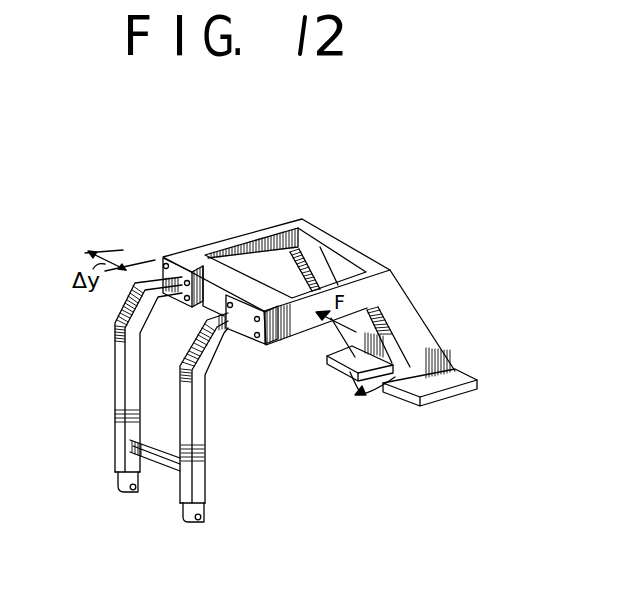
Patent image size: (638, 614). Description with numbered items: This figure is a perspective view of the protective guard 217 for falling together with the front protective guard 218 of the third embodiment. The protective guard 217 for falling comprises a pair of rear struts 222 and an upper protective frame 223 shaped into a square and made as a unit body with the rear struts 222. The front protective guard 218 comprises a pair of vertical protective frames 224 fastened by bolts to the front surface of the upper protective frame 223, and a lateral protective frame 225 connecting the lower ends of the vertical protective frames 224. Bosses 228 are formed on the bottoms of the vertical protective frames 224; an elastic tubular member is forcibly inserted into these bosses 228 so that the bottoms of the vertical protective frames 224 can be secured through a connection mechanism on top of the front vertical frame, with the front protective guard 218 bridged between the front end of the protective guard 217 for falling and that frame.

The protective guard for falling 217 is at (396, 215).
The front protective guard 218 is at (112, 363).
The rear strut 222 is at (401, 349).
The upper protective frame 223 is at (218, 244).
The vertical protective frame 224 is at (113, 412).
The lateral protective frame 225 is at (164, 478).
The boss 228 is at (136, 492).